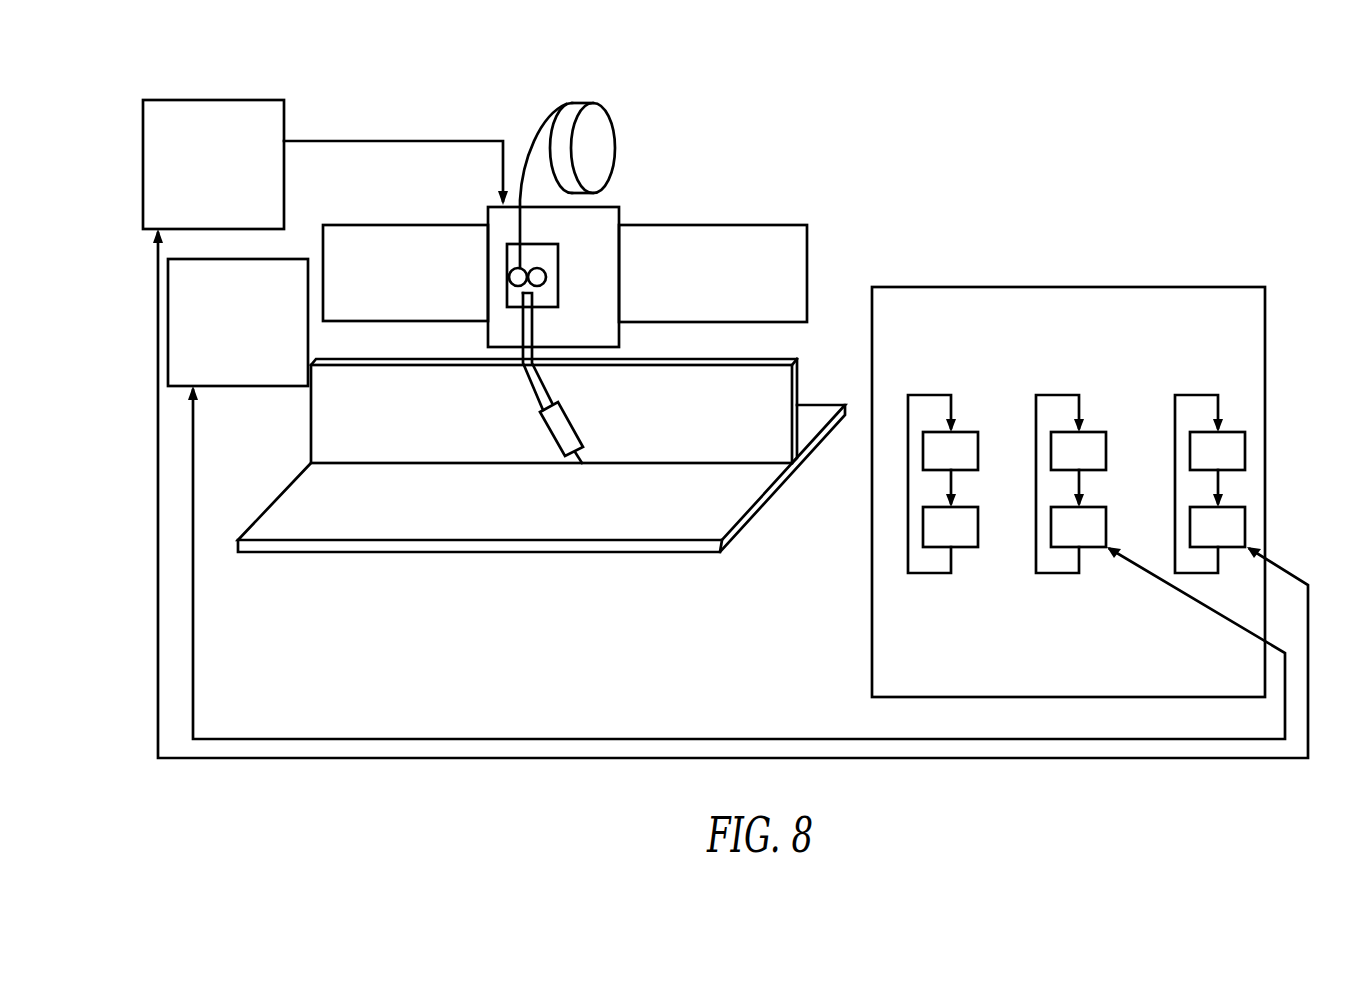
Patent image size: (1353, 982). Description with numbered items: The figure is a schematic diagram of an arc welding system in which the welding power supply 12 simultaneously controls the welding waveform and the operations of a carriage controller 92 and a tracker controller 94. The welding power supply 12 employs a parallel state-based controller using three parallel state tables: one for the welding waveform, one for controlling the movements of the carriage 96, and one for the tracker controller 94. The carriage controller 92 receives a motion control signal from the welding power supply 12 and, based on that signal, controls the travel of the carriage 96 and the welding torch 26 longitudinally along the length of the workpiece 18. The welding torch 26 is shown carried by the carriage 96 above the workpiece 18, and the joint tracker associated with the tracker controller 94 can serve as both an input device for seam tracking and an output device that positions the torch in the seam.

The welding power supply 12 is at (1105, 287).
The workpiece 18 is at (347, 553).
The welding torch 26 is at (557, 447).
The carriage controller 92 is at (228, 100).
The tracker controller 94 is at (235, 388).
The carriage 96 is at (617, 207).